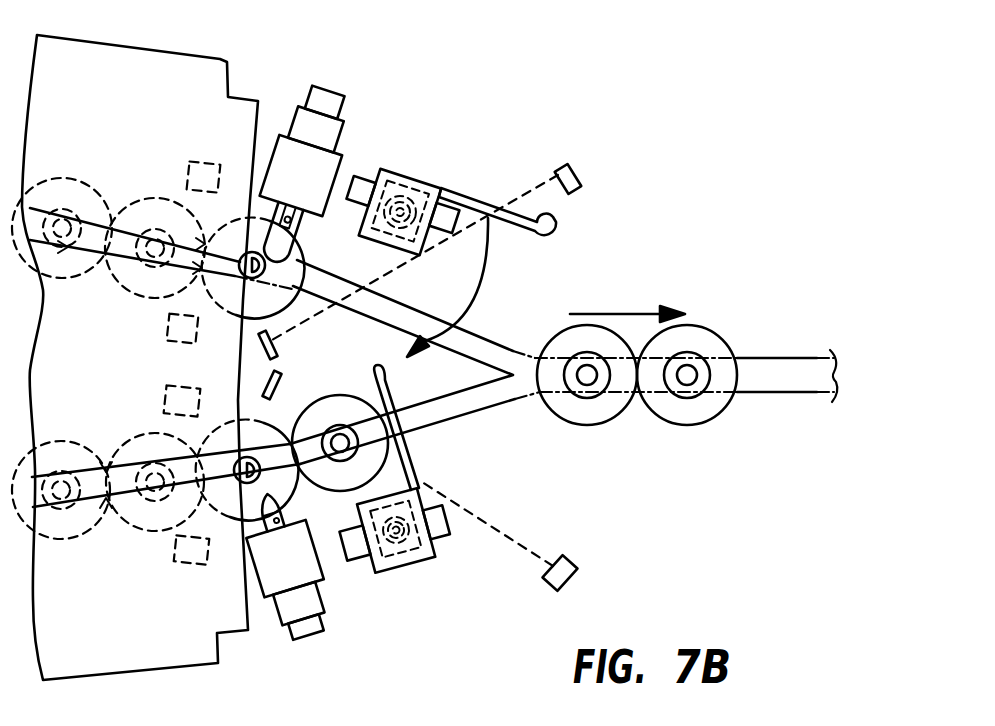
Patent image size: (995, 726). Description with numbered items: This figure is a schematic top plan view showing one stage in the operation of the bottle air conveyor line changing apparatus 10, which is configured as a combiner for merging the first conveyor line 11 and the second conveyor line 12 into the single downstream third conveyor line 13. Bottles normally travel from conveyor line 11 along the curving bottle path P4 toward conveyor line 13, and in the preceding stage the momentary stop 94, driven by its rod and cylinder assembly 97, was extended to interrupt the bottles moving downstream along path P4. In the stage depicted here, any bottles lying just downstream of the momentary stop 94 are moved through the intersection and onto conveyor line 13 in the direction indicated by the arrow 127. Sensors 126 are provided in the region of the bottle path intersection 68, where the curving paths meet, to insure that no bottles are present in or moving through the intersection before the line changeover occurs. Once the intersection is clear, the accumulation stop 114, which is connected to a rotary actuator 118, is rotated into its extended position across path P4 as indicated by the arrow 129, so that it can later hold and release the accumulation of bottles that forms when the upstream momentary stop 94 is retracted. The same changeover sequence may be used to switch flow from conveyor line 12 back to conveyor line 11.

The bottle air conveyor line changing apparatus 10 is at (279, 98).
The first conveyor line 11 is at (114, 205).
The second conveyor line 12 is at (100, 500).
The third conveyor line 13 is at (791, 357).
The intersection of bottle paths 68 is at (530, 374).
The momentary stop 94 is at (291, 243).
The rod and cylinder assembly 97 is at (315, 128).
The accumulation stop 114 is at (505, 206).
The rotary actuator 118 is at (413, 180).
The sensor 126 is at (578, 170).
The arrow 127 is at (613, 313).
The arrow 129 is at (487, 240).
The curving bottle path P4 is at (503, 338).